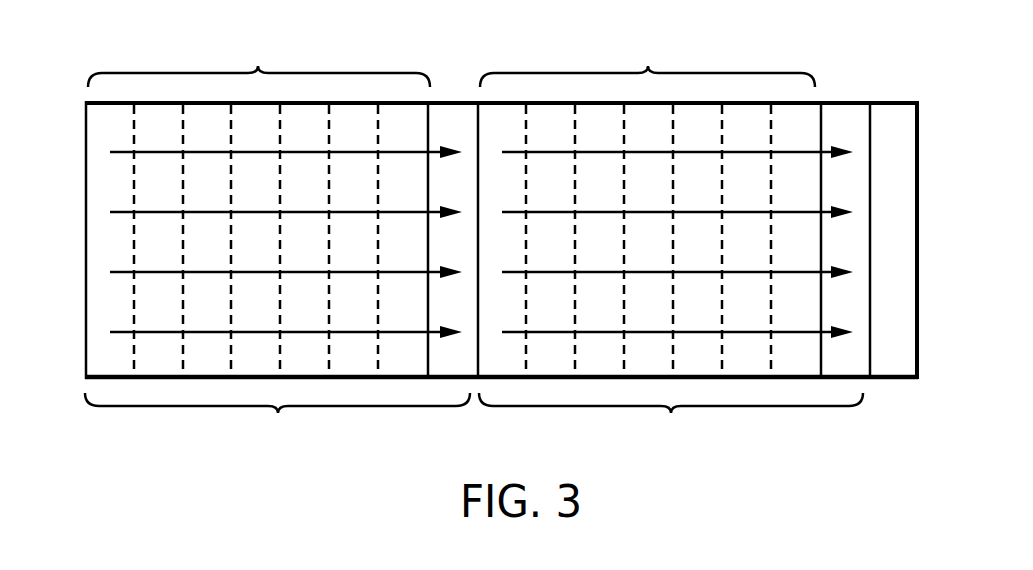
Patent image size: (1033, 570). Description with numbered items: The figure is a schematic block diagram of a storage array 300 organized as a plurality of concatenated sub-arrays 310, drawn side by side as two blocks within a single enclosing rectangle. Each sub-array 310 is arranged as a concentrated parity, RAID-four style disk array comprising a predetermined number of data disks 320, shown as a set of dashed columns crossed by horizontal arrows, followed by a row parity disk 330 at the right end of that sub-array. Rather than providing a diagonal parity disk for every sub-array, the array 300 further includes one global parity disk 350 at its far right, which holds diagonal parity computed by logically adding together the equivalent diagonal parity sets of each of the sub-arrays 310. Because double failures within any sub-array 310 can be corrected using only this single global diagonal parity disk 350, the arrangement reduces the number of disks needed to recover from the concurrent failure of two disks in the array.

The storage array 300 is at (74, 94).
The sub-array 310 is at (474, 244).
The data disks 320 is at (152, 237).
The row parity disk 330 is at (845, 110).
The global parity disk 350 is at (897, 110).